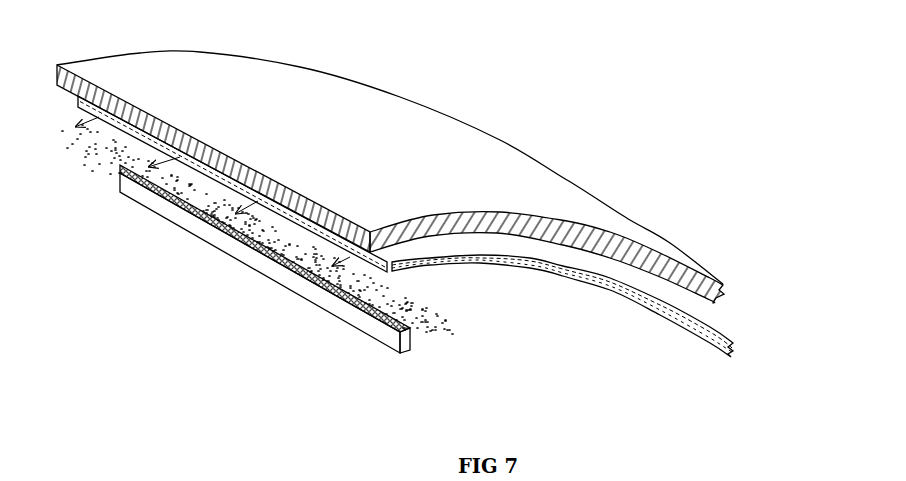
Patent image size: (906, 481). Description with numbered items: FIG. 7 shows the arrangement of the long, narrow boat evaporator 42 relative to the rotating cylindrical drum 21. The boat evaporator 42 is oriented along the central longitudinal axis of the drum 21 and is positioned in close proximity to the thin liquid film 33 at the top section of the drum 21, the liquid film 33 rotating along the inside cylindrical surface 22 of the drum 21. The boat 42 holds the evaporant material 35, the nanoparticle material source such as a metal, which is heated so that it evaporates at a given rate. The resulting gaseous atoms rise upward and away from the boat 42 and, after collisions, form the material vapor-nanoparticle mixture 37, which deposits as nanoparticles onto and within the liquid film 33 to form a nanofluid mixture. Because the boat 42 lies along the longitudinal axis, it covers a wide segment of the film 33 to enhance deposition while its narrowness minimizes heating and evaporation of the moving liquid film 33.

The drum 21 is at (668, 270).
The inside cylindrical surface 22 is at (614, 263).
The liquid film 33 is at (566, 274).
The evaporant material 35 is at (350, 299).
The material vapor-nanoparticle mixture 37 is at (391, 295).
The boat evaporator 42 is at (257, 259).